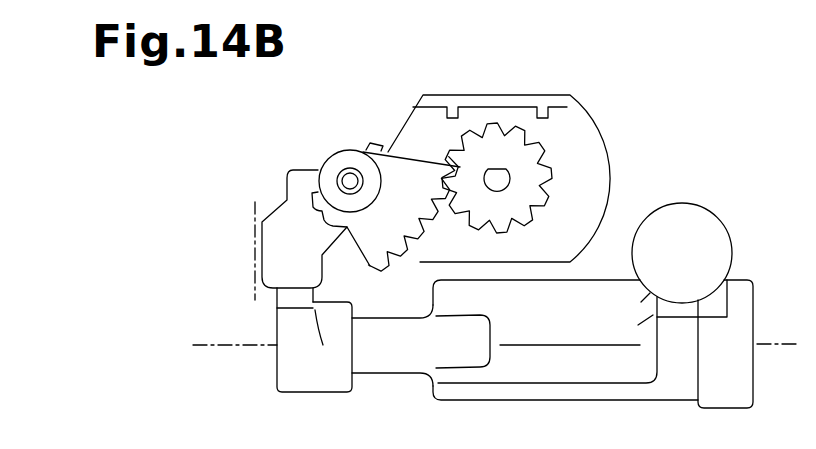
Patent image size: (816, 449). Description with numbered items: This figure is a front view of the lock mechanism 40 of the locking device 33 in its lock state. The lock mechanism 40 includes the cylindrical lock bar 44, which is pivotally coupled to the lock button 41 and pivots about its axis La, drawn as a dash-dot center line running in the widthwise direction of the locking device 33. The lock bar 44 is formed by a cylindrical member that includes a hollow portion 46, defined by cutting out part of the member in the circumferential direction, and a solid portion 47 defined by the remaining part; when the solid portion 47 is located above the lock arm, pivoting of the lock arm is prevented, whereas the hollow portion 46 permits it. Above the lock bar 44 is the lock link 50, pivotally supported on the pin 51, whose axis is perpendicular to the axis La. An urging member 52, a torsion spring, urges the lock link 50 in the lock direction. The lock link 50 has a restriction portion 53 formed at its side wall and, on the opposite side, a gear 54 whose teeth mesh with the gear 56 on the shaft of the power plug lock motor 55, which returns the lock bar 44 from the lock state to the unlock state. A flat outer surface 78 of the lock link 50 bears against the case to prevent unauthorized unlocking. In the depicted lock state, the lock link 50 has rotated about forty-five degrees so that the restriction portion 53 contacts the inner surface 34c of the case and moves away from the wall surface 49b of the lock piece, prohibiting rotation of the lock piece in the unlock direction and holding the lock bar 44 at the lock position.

The locking device 33 is at (677, 90).
The power plug lock motor 55 is at (563, 95).
The gear 56 is at (555, 190).
The gear 54 is at (444, 233).
The lock link 50 is at (390, 176).
The urging member 52 is at (363, 149).
The pin 51 is at (350, 178).
The outer surface 78 is at (413, 182).
The restriction portion 53 is at (270, 249).
The inner surface 34c is at (263, 203).
The axis La is at (208, 345).
The wall surface 49b is at (313, 298).
The lock mechanism 40 is at (300, 410).
The solid portion 47 is at (608, 401).
The hollow portion 46 is at (597, 297).
The lock button 41 is at (683, 206).
The lock bar 44 is at (748, 297).